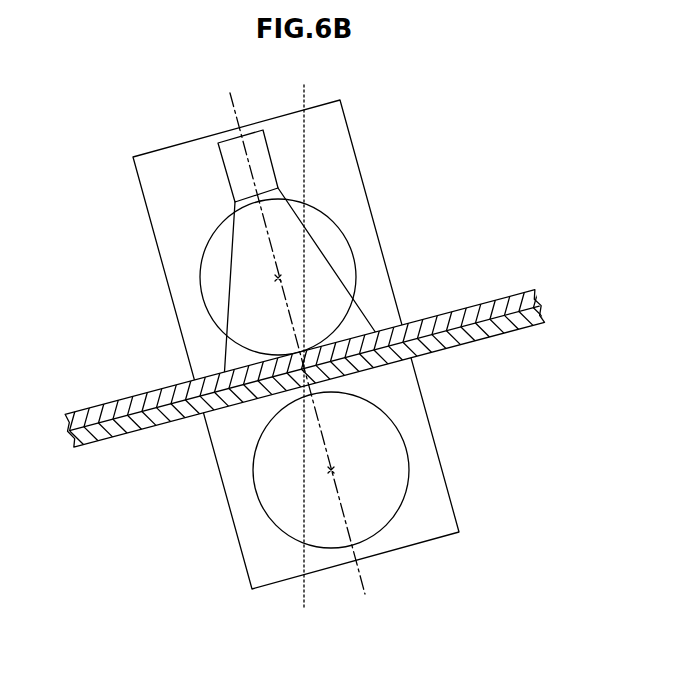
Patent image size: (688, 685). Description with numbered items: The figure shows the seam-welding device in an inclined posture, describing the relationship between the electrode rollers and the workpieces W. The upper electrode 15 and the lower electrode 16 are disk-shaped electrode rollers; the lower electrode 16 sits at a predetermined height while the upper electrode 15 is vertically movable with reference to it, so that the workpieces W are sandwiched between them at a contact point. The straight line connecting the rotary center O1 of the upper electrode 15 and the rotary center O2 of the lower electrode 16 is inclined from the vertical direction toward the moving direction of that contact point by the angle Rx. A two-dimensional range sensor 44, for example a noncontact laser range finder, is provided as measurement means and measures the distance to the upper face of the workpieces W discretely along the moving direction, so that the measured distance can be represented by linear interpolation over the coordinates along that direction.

The two-dimensional range sensor 44 is at (228, 177).
The upper electrode 15 is at (306, 198).
The lower electrode 16 is at (393, 412).
The rotary center of the upper electrode O1 is at (281, 277).
The rotary center of the lower electrode O2 is at (333, 470).
The workpieces W is at (513, 292).
The angle RX Rx is at (303, 98).